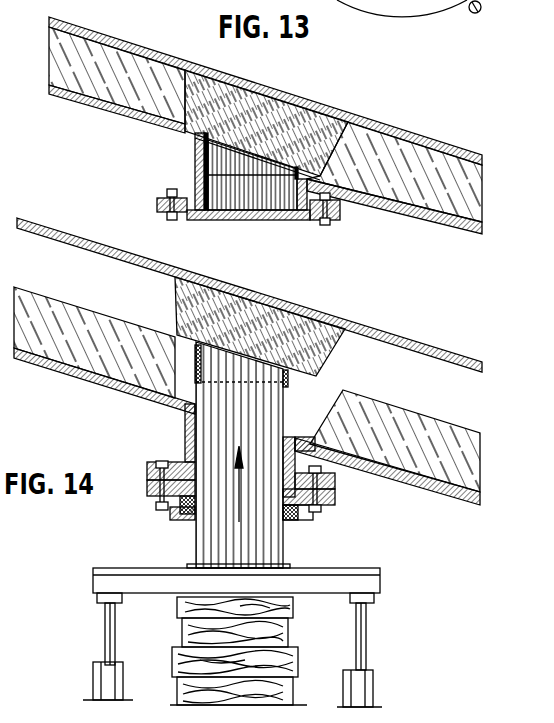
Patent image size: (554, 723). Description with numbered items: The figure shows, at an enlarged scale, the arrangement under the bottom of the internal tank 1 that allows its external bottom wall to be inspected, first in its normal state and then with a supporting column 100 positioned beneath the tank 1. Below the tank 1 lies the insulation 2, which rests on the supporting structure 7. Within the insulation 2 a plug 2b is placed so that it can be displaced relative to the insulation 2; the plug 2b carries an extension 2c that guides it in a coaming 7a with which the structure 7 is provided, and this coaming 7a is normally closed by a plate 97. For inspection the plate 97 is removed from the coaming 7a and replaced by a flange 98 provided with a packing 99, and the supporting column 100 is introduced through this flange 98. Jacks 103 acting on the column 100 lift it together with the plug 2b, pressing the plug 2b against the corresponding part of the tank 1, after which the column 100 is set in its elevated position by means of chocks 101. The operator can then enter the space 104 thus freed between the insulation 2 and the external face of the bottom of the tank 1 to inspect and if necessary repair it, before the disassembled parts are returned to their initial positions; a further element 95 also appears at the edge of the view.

In FIG. 13, the tank 1 is at (157, 53).
In FIG. 14, the tank 1 is at (65, 234).
In FIG. 13, the insulation 2 is at (127, 68).
In FIG. 14, the insulation 2 is at (45, 342).
In FIG. 13, the plug 2b is at (298, 128).
In FIG. 14, the plug 2b is at (288, 328).
In FIG. 13, the extension 2c is at (203, 168).
In FIG. 14, the extension 2c is at (197, 370).
In FIG. 13, the supporting structure 7 is at (107, 113).
In FIG. 14, the supporting structure 7 is at (88, 373).
In FIG. 13, the coaming 7a is at (198, 162).
In FIG. 14, the coaming 7a is at (185, 443).
In FIG. 13, the pivot 95 is at (481, 11).
In FIG. 13, the plate 97 is at (261, 219).
In FIG. 14, the flange 98 is at (150, 478).
In FIG. 14, the packing 99 is at (180, 512).
In FIG. 14, the supporting column 100 is at (253, 536).
In FIG. 14, the chock 101 is at (168, 631).
In FIG. 14, the jack 103 is at (107, 647).
In FIG. 14, the space 104 is at (102, 290).